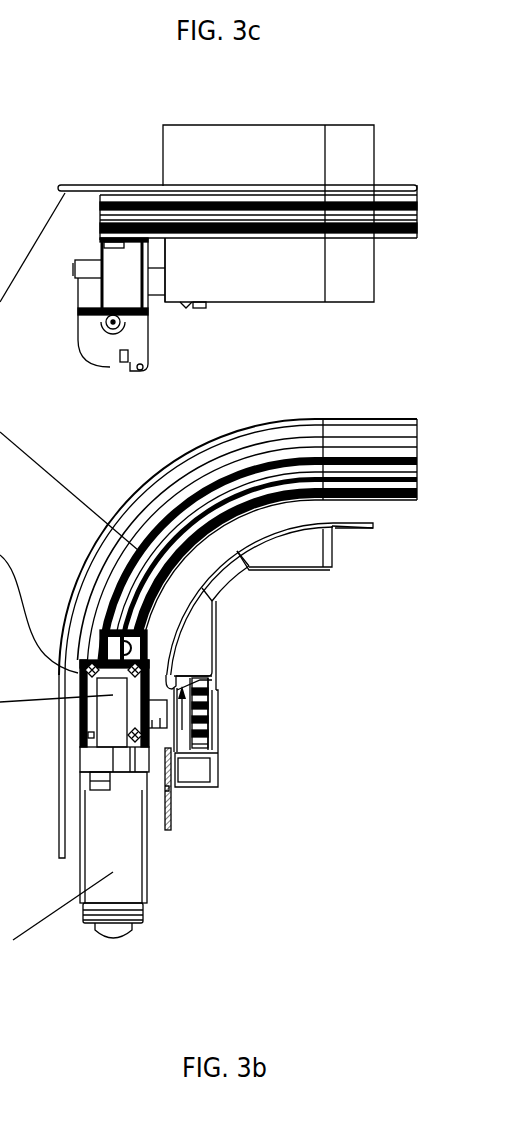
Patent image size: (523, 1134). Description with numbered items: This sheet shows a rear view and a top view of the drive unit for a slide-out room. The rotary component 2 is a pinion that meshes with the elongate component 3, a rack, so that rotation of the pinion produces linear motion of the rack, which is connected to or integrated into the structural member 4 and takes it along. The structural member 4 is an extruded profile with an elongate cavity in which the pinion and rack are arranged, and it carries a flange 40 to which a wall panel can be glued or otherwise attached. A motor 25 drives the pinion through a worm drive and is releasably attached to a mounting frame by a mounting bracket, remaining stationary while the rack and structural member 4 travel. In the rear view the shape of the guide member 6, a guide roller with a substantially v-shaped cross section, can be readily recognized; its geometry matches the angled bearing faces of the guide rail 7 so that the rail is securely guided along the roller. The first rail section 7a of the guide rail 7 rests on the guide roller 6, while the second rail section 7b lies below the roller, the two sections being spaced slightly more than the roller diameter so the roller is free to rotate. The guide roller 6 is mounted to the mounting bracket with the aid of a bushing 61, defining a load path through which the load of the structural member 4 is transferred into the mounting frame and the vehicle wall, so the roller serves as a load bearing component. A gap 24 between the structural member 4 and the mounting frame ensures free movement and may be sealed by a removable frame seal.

In FIG. 3b, the rotary component 2 is at (207, 698).
In FIG. 3b, the elongate component 3 is at (198, 680).
In FIG. 3c, the structural member 4 is at (236, 148).
In FIG. 3b, the structural member 4 is at (307, 570).
In FIG. 3b, the guide member 6 is at (173, 787).
In FIG. 3b, the guide rail 7 is at (183, 650).
In FIG. 3b, the first rail section 7a is at (182, 680).
In FIG. 3b, the second rail section 7b is at (172, 754).
In FIG. 3b, the gap 24 is at (353, 510).
In FIG. 3c, the motor 25 is at (126, 362).
In FIG. 3b, the flange 40 is at (347, 528).
In FIG. 3b, the bushing 61 is at (157, 720).